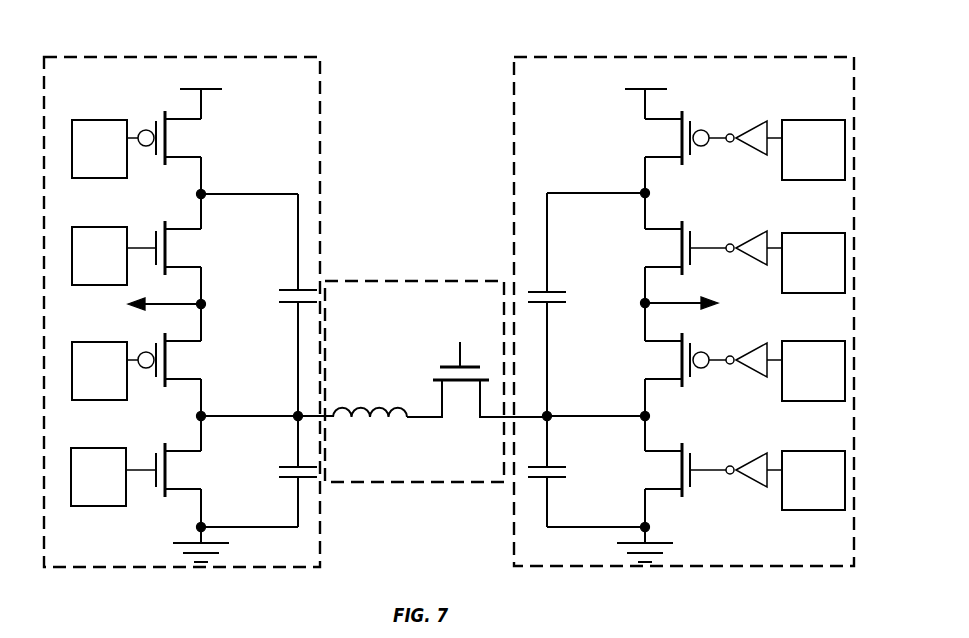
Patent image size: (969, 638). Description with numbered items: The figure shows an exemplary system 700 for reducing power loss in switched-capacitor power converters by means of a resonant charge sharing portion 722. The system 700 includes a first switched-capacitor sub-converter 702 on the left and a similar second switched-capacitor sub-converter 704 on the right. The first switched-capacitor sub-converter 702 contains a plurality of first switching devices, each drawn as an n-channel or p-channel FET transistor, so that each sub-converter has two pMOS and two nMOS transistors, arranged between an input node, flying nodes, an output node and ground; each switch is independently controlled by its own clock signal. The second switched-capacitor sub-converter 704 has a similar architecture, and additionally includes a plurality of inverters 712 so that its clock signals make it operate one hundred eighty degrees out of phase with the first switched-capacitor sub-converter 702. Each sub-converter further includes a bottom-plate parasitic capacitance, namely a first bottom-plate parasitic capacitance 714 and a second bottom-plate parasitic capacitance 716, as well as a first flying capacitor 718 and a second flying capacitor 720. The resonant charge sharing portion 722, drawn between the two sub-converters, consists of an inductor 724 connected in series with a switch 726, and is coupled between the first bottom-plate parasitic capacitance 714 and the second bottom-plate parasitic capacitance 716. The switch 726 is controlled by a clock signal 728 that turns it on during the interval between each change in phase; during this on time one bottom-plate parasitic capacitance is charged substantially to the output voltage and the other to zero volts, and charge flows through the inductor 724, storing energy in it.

The system 700 is at (90, 44).
The first switched-capacitor sub-converter 702 is at (319, 57).
The second switched-capacitor sub-converter 704 is at (513, 66).
The inverter 712 is at (765, 121).
The first bottom-plate parasitic capacitance 714 is at (262, 471).
The second bottom-plate parasitic capacitance 716 is at (581, 471).
The first flying capacitor 718 is at (272, 305).
The second flying capacitor 720 is at (572, 304).
The resonant charge sharing portion 722 is at (418, 281).
The inductor 724 is at (370, 382).
The switch 726 is at (477, 382).
The clock signal 728 is at (460, 334).